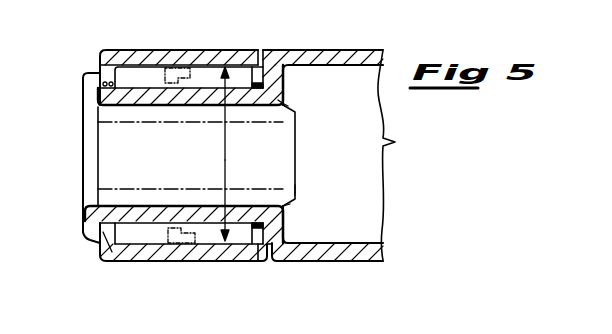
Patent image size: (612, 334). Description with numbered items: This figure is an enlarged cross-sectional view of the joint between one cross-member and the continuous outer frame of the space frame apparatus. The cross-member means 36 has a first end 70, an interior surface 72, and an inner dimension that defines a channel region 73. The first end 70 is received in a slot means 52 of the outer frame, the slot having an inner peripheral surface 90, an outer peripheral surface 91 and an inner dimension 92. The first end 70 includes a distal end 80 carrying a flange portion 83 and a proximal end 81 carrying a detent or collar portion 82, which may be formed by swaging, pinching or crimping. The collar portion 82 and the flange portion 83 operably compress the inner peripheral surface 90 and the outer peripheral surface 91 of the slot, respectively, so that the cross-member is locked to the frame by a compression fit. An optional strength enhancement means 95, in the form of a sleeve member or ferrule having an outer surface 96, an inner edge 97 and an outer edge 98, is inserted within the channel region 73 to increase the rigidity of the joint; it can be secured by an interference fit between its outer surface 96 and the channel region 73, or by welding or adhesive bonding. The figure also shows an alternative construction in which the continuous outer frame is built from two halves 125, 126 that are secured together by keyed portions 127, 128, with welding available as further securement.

The cross-member means 36 is at (328, 264).
The slot means 52 is at (115, 51).
The first end 70 is at (131, 225).
The interior surface 72 is at (138, 108).
The channel region 73 is at (386, 138).
The distal end 80 is at (85, 208).
The proximal end 81 is at (257, 204).
The collar portion 82 is at (268, 264).
The flange portion 83 is at (95, 242).
The inner peripheral surface 90 is at (266, 64).
The outer peripheral surface 91 is at (100, 72).
The inner dimension 92 is at (196, 155).
The strength enhancement means 95 is at (285, 106).
The outer surface 96 is at (288, 206).
The inner edge 97 is at (297, 190).
The outer edge 98 is at (83, 117).
The half 125 is at (167, 52).
The half 126 is at (205, 50).
The keyed portion 127 is at (163, 264).
The keyed portion 128 is at (205, 263).